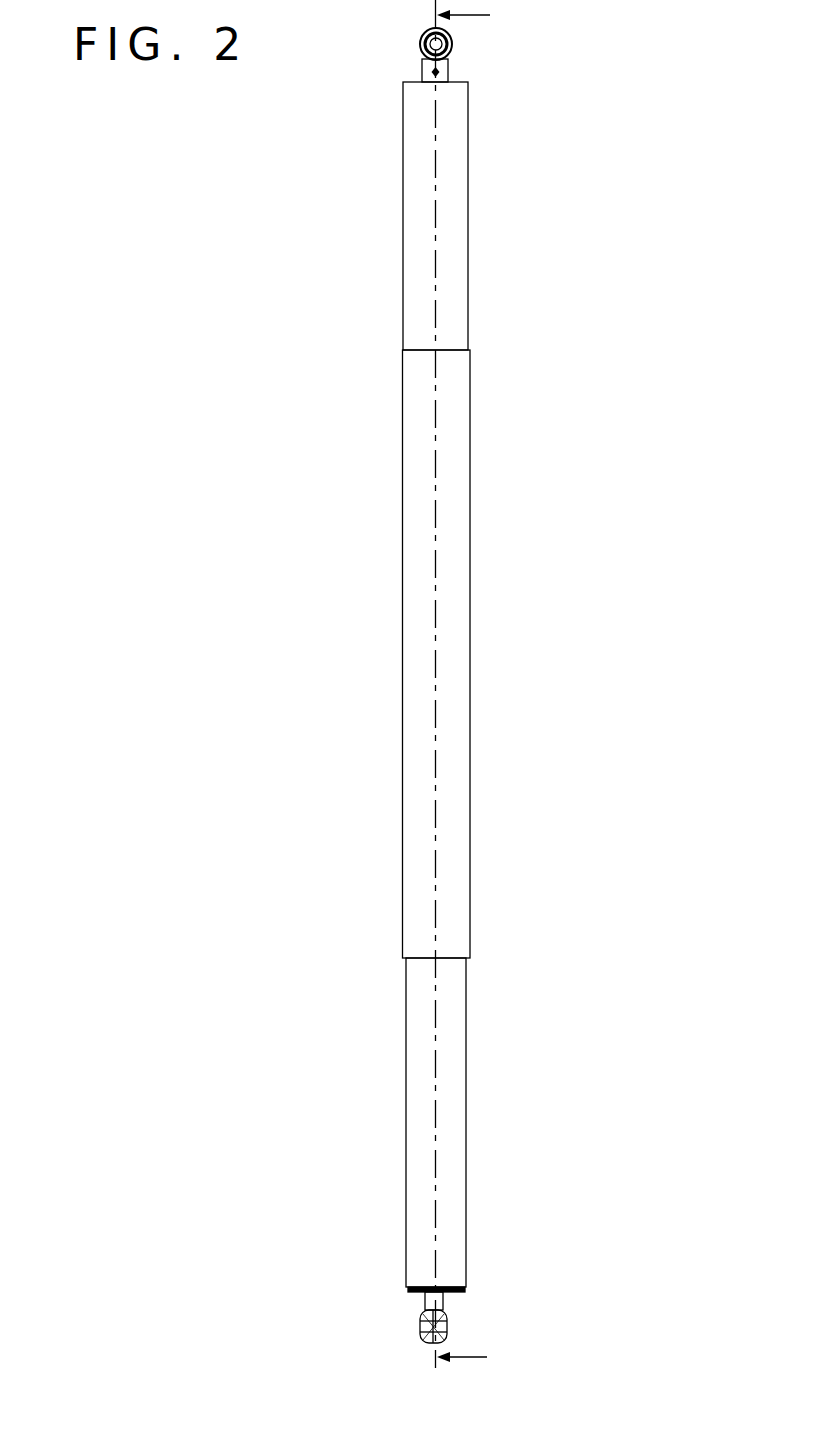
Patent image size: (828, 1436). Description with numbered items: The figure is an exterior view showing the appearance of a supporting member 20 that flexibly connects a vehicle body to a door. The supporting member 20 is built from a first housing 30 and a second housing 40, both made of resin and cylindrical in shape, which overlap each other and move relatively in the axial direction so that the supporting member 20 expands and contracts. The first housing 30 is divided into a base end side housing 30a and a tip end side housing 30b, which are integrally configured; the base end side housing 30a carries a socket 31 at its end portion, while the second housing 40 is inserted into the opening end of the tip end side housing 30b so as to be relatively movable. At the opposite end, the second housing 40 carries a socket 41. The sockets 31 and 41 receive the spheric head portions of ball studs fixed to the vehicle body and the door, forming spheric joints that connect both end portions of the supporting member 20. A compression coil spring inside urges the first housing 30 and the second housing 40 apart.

The supporting member 20 is at (503, 94).
The first housing 30 is at (538, 520).
The base end side housing 30a is at (468, 302).
The tip end side housing 30b is at (470, 362).
The socket 31 is at (421, 46).
The second housing 40 is at (466, 1035).
The socket 41 is at (420, 1326).